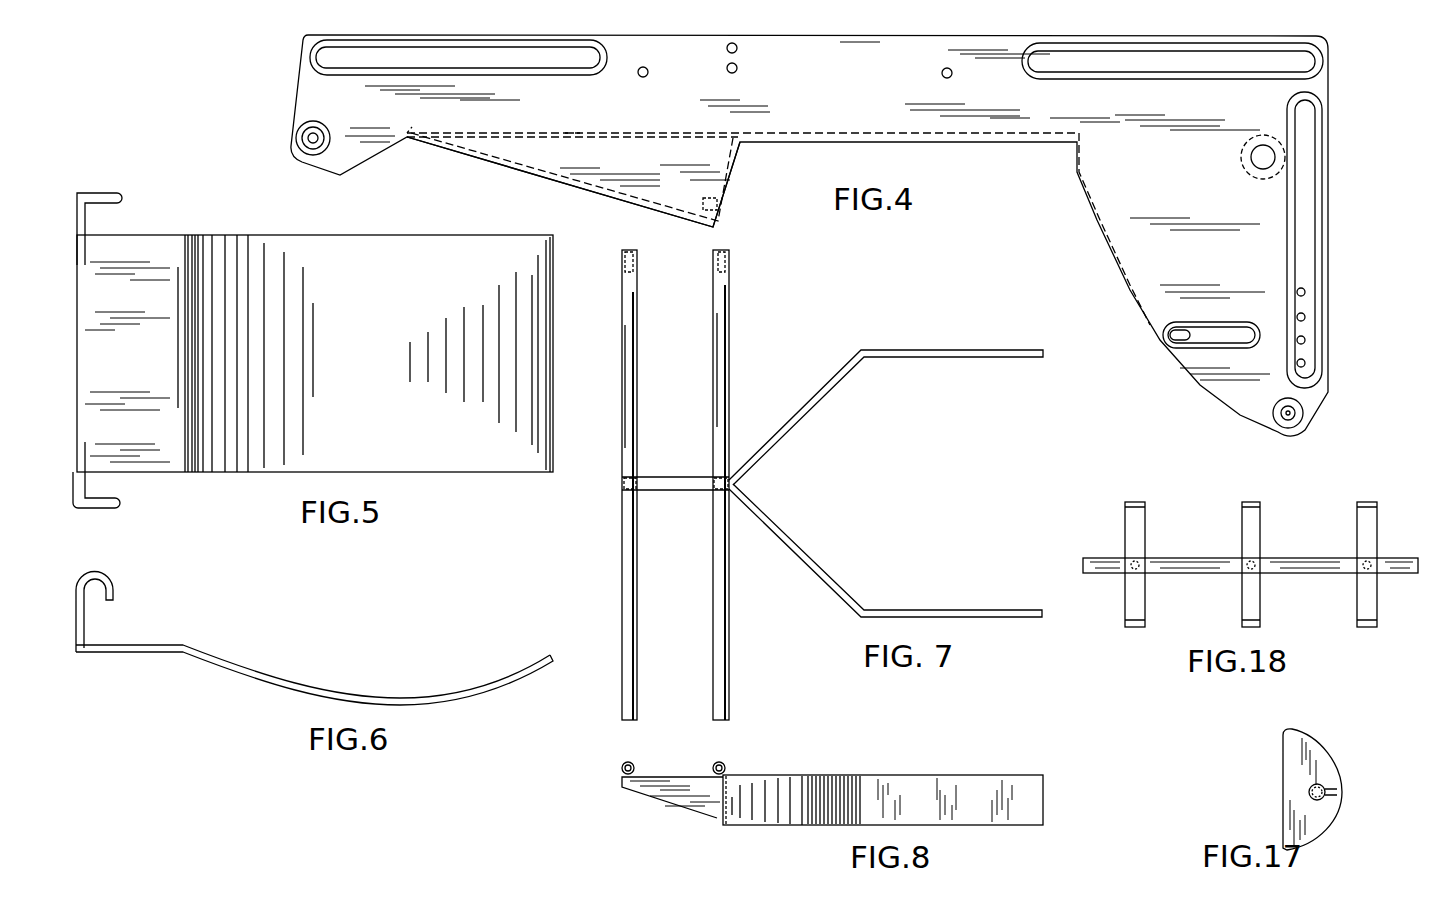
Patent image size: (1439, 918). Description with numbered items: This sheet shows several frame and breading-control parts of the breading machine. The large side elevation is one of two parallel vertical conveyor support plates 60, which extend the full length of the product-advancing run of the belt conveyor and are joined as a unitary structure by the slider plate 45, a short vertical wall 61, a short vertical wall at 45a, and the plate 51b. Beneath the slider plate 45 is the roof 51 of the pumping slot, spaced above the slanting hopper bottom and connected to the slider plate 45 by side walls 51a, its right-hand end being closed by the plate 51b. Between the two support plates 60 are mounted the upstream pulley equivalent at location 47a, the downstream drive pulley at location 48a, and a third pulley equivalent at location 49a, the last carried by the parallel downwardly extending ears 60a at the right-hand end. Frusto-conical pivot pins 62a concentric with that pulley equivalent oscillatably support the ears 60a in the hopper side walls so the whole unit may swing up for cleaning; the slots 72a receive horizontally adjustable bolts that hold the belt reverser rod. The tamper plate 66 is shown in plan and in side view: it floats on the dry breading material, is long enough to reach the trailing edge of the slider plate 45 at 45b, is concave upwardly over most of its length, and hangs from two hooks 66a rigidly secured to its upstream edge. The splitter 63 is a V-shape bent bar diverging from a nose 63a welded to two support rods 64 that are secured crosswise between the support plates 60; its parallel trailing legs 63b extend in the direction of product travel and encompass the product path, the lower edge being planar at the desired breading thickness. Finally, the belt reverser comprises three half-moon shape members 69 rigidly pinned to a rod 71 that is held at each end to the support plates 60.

In FIG. 4, the vertical conveyor support plate 60 is at (806, 83).
In FIG. 4, the ear 60a is at (1150, 195).
In FIG. 4, the slider plate 45 is at (927, 142).
In FIG. 4, the short vertical wall 45a is at (407, 133).
In FIG. 4, the trailing edge of the slider plate 45b is at (570, 133).
In FIG. 4, the upstream pulley equivalent location 47a is at (296, 138).
In FIG. 4, the downstream drive pulley location 48a is at (1275, 157).
In FIG. 4, the third pulley equivalent location 49a is at (1300, 413).
In FIG. 4, the roof 51 is at (558, 184).
In FIG. 4, the side wall 51a is at (578, 178).
In FIG. 4, the plate 51b is at (735, 170).
In FIG. 4, the short vertical wall 61 is at (1077, 160).
In FIG. 4, the pivot pin 62a is at (1300, 400).
In FIG. 4, the slot 72a is at (1180, 338).
In FIG. 5, the tamper plate 66 is at (346, 318).
In FIG. 6, the tamper plate 66 is at (393, 686).
In FIG. 5, the hook 66a is at (100, 193).
In FIG. 6, the hook 66a is at (98, 580).
In FIG. 7, the splitter 63 is at (800, 408).
In FIG. 8, the splitter 63 is at (800, 777).
In FIG. 7, the nose 63a is at (674, 486).
In FIG. 8, the nose 63a is at (675, 777).
In FIG. 7, the trailing leg 63b is at (963, 350).
In FIG. 8, the trailing leg 63b is at (962, 776).
In FIG. 7, the support rod 64 is at (714, 418).
In FIG. 8, the support rod 64 is at (622, 766).
In FIG. 18, the half-moon shape member 69 is at (1145, 533).
In FIG. 17, the half-moon shape member 69 is at (1318, 814).
In FIG. 18, the rod 71 is at (1193, 560).
In FIG. 17, the rod 71 is at (1325, 786).